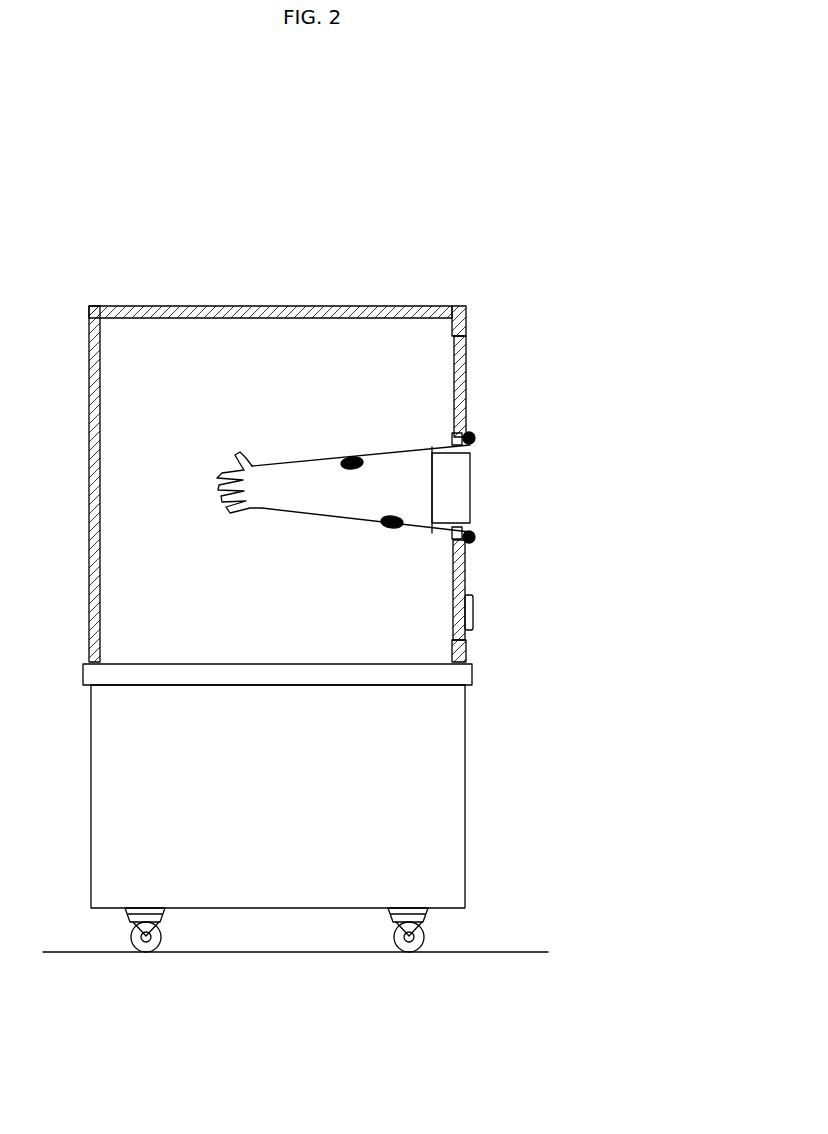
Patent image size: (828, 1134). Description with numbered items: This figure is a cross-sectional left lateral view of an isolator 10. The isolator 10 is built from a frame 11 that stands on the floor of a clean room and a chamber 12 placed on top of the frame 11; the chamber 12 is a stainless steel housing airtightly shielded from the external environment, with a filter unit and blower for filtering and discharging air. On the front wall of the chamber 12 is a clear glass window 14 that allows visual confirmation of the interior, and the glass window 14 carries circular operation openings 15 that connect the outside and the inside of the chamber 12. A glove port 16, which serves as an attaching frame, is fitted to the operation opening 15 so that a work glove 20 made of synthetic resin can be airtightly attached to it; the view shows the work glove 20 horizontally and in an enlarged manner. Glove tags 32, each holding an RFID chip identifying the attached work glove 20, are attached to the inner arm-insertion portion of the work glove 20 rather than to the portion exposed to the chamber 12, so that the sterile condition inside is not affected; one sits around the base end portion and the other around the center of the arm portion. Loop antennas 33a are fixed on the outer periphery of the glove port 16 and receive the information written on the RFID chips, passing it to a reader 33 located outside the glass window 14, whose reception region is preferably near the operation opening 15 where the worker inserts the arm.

The isolator 10 is at (394, 282).
The frame 11 is at (413, 793).
The chamber 12 is at (130, 306).
The glass window 14 is at (466, 385).
The operation opening 15 is at (528, 495).
The glove port 16 is at (446, 447).
The work glove 20 is at (305, 513).
The glove tag 32 is at (350, 460).
The reader 33 is at (474, 613).
The loop antenna 33a is at (475, 438).